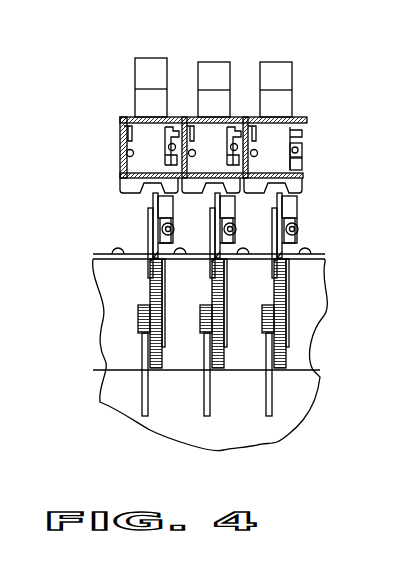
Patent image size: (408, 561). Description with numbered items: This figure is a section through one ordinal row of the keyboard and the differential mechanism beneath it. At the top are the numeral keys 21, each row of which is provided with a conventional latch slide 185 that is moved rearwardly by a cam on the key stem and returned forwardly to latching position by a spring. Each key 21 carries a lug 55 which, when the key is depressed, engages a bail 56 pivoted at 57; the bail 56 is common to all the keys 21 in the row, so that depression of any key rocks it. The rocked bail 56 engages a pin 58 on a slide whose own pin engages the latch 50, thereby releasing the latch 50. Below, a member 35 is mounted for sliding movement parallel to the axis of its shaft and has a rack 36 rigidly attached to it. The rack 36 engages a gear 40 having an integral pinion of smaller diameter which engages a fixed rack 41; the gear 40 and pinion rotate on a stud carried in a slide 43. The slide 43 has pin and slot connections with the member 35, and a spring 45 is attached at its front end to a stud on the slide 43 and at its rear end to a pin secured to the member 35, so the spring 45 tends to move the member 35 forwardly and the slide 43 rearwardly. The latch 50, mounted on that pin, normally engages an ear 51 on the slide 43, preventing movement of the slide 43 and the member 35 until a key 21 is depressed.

The key 21 is at (275, 65).
The latch slide 185 is at (302, 123).
The lug 55 is at (302, 135).
The bail 56 is at (302, 150).
The pivot 57 is at (256, 156).
The pin 58 is at (302, 165).
The slide 43 is at (280, 203).
The ear 51 is at (293, 202).
The latch 50 is at (295, 215).
The member 35 is at (275, 232).
The spring 45 is at (300, 235).
The rack 36 is at (287, 277).
The gear 40 is at (285, 305).
The fixed rack 41 is at (267, 350).